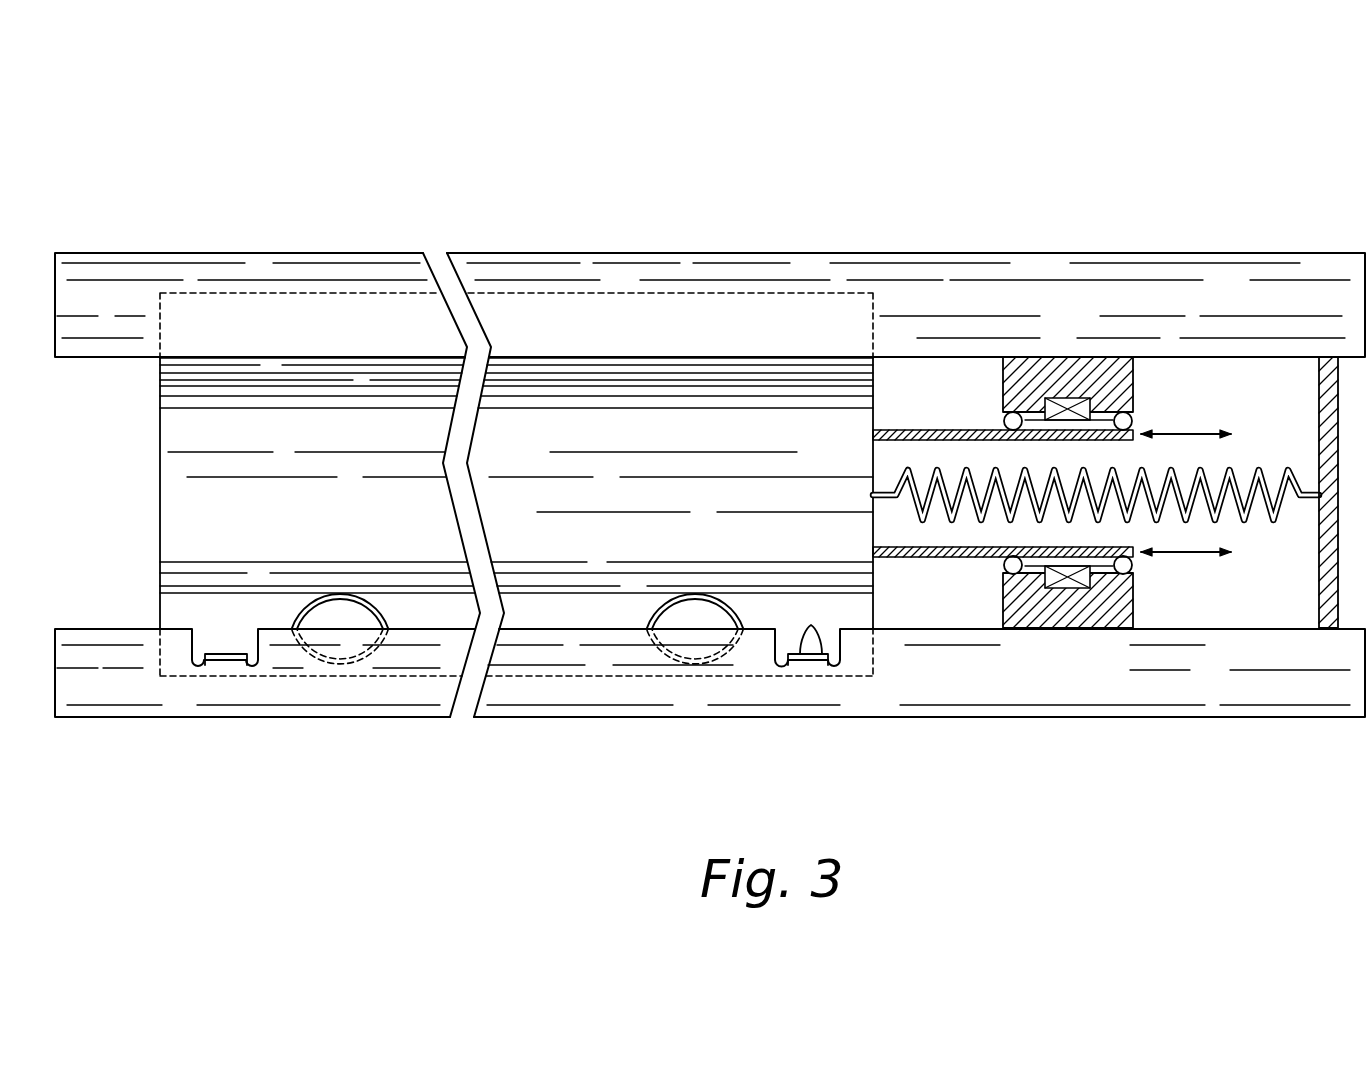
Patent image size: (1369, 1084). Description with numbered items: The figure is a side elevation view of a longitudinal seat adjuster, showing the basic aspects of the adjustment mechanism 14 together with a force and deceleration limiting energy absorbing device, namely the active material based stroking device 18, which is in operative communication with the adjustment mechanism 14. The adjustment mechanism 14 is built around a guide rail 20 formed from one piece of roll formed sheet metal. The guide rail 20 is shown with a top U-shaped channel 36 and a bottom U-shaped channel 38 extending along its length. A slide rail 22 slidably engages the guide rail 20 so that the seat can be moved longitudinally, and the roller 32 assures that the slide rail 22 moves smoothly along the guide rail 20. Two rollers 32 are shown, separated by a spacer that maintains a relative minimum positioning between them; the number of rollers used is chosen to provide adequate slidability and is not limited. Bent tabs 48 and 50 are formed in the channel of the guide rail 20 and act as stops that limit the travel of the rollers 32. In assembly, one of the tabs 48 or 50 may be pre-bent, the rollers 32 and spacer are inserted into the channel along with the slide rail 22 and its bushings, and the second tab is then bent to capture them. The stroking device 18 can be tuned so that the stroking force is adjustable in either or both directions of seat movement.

The adjustment mechanism 14 is at (500, 185).
The active material based stroking device 18 is at (1162, 396).
The guide rail 20 is at (700, 247).
The slide rail 22 is at (877, 392).
The roller 32 is at (340, 617).
The top U-shaped channel 36 is at (292, 270).
The bottom U-shaped channel 38 is at (215, 700).
The bent tab 48 is at (225, 653).
The bent tab 50 is at (822, 650).